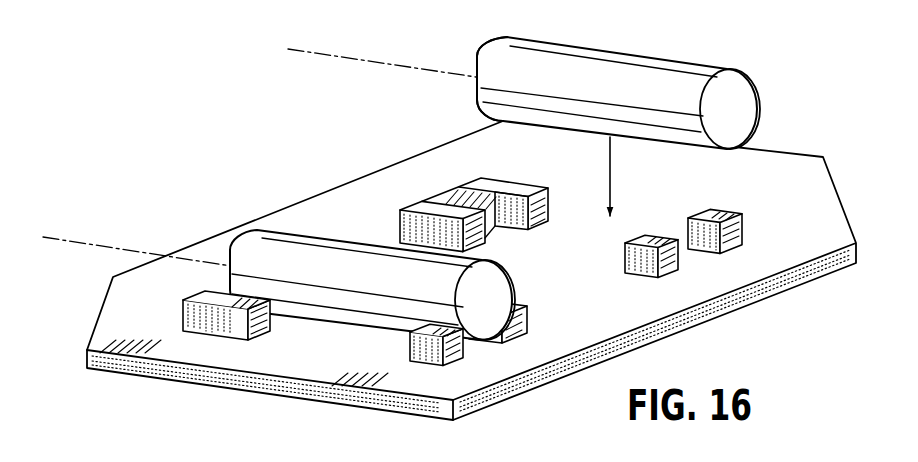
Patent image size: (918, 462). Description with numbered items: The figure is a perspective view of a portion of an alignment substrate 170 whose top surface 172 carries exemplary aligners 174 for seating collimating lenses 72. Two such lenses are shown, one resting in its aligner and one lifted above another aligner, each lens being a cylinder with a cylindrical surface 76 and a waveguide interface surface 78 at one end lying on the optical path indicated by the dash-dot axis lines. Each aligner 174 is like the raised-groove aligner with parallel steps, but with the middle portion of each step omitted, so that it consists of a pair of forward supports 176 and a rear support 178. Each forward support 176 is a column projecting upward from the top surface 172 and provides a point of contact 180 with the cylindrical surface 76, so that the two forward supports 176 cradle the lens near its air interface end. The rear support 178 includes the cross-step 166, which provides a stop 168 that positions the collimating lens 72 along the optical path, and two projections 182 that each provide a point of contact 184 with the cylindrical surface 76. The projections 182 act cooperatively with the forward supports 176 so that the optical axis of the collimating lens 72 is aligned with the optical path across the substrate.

The collimating lens 72 is at (258, 232).
The cylindrical surface 76 is at (318, 277).
The waveguide interface surface 78 is at (479, 53).
The cross-step 166 is at (423, 207).
The stop 168 is at (490, 192).
The alignment substrate 170 is at (471, 263).
The top surface 172 is at (828, 244).
The aligner 174 is at (627, 185).
The forward support 176 is at (529, 327).
The rear support 178 is at (199, 291).
The point of contact 180 is at (693, 215).
The projection 182 is at (489, 226).
The point of contact 184 is at (479, 208).